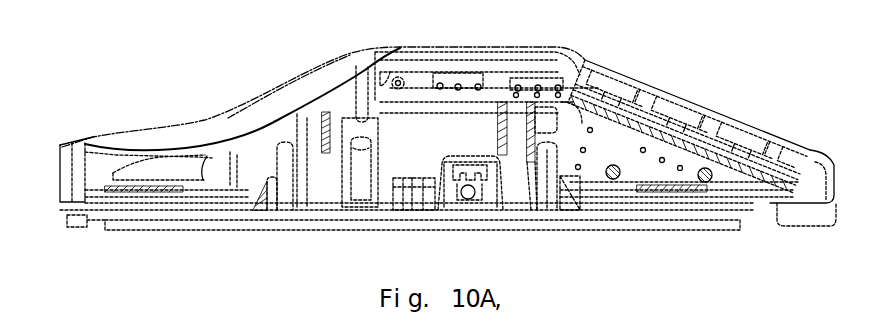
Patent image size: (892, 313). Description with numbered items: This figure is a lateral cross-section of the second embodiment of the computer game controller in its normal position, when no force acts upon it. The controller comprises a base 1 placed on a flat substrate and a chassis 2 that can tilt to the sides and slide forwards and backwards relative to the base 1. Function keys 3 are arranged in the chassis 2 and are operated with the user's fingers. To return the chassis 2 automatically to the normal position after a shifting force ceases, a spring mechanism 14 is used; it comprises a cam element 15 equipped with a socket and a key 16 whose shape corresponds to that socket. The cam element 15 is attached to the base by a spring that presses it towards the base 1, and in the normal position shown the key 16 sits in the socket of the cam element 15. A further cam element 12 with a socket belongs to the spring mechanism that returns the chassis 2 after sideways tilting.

The base 1 is at (637, 220).
The chassis 2 is at (228, 118).
The function keys 3 is at (770, 150).
The cam element 12 is at (358, 165).
The spring mechanism 14 is at (496, 165).
The cam element 15 is at (457, 182).
The key 16 is at (468, 190).